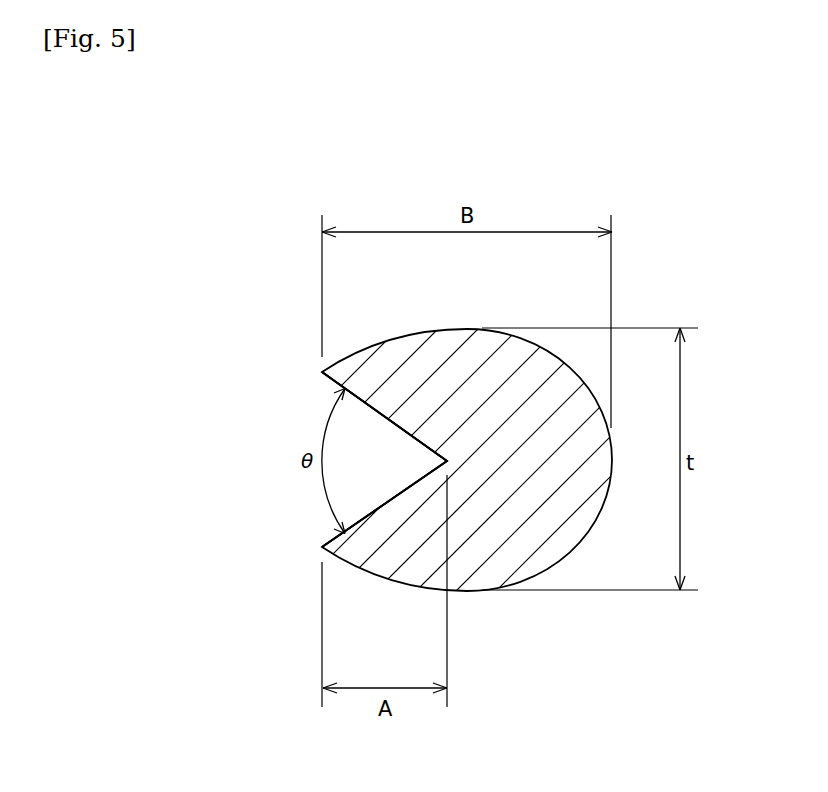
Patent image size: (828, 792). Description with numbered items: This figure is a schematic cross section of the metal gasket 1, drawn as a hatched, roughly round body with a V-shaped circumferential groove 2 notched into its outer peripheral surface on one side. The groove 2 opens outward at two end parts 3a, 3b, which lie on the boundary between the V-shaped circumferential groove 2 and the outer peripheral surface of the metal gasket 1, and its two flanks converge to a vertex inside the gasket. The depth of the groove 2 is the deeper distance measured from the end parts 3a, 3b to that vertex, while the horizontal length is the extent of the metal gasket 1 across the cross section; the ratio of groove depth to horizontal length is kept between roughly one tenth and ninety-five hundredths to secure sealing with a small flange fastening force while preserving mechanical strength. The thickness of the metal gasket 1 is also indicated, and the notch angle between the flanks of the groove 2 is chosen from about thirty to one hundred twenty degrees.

The metal gasket 1 is at (411, 338).
The V-shaped circumferential groove 2 is at (272, 452).
The end part of the circumferential groove 3a is at (307, 370).
The end part of the circumferential groove 3b is at (307, 550).